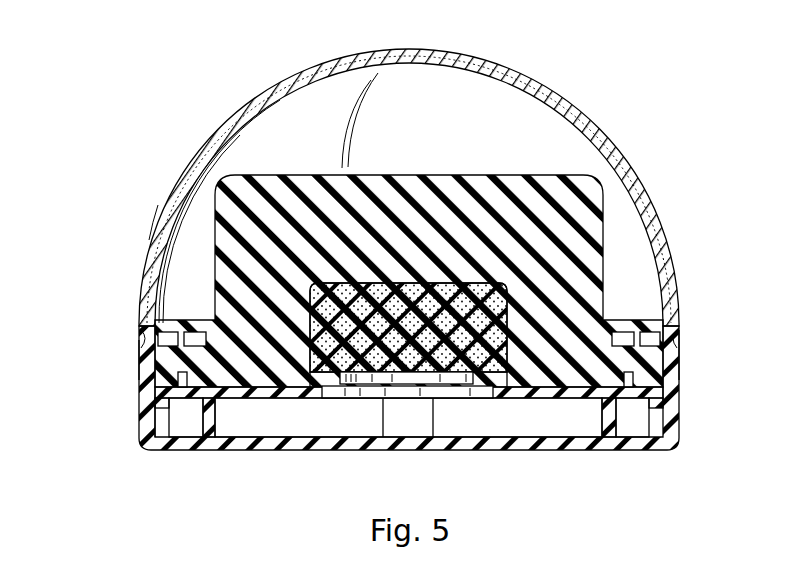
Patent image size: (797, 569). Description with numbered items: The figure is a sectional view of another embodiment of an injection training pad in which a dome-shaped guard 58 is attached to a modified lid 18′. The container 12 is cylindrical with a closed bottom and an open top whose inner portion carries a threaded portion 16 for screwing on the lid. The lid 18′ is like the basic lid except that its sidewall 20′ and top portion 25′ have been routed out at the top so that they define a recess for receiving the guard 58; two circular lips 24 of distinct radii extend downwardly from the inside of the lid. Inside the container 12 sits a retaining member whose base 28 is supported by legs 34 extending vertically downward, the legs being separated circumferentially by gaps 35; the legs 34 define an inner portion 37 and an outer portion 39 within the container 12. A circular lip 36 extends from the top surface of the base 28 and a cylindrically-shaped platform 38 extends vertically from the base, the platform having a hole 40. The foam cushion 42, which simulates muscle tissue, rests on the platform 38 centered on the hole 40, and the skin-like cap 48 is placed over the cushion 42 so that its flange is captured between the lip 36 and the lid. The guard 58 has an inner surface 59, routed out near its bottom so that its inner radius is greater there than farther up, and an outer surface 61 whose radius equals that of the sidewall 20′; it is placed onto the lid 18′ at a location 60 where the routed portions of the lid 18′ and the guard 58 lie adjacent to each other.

The container 12 is at (672, 449).
The threaded portion 16 is at (146, 402).
The lid 18′ is at (139, 354).
The sidewall 20′ is at (676, 343).
The circular lips 24 is at (177, 320).
The top portion 25′ is at (153, 237).
The base 28 is at (143, 418).
The legs 34 is at (200, 422).
The gaps 35 is at (393, 437).
The circular lip 36 is at (147, 342).
The inner portion 37 is at (285, 440).
The cylindrically-shaped platform 38 is at (355, 395).
The outer portion 39 is at (148, 437).
The hole 40 is at (460, 388).
The cushion 42 is at (455, 290).
The cap 48 is at (478, 183).
The guard 58 is at (357, 57).
The inner surface 59 is at (313, 78).
The location 60 is at (141, 327).
The outer surface 61 is at (277, 73).